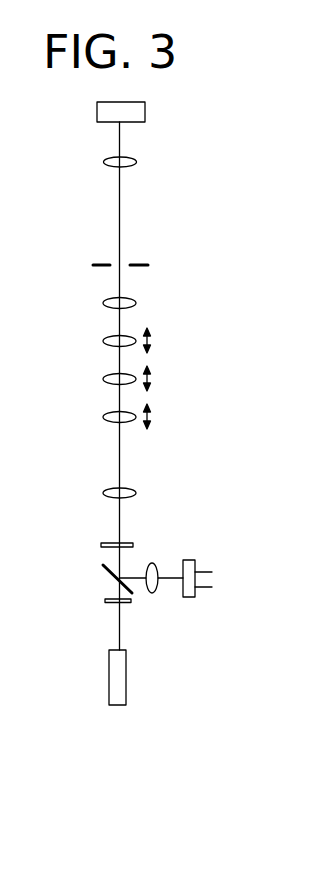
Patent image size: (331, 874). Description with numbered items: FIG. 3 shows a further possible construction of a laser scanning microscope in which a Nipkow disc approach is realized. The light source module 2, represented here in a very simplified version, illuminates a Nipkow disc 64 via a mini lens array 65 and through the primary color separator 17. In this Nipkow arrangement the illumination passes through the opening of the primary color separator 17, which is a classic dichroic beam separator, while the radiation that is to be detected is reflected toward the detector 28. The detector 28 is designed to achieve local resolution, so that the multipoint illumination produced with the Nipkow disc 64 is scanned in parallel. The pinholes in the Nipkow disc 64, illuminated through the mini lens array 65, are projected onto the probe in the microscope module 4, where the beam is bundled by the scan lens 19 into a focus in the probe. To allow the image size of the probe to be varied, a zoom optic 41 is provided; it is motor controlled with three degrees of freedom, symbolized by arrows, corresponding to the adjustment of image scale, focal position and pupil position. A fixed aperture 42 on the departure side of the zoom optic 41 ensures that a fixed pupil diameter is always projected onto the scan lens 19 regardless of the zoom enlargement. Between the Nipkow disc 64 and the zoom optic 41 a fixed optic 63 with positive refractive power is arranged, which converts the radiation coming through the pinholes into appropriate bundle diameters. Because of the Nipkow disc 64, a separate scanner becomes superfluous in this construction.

The microscope module 4 is at (145, 108).
The scan lens 19 is at (130, 158).
The fixed aperture 42 is at (142, 263).
The zoom optic 41 is at (190, 287).
The fixed optic 63 is at (133, 488).
The Nipkow disc 64 is at (107, 543).
The primary color separator 17 is at (108, 578).
The detector 28 is at (189, 597).
The mini lens array 65 is at (110, 605).
The light source module 2 is at (145, 697).